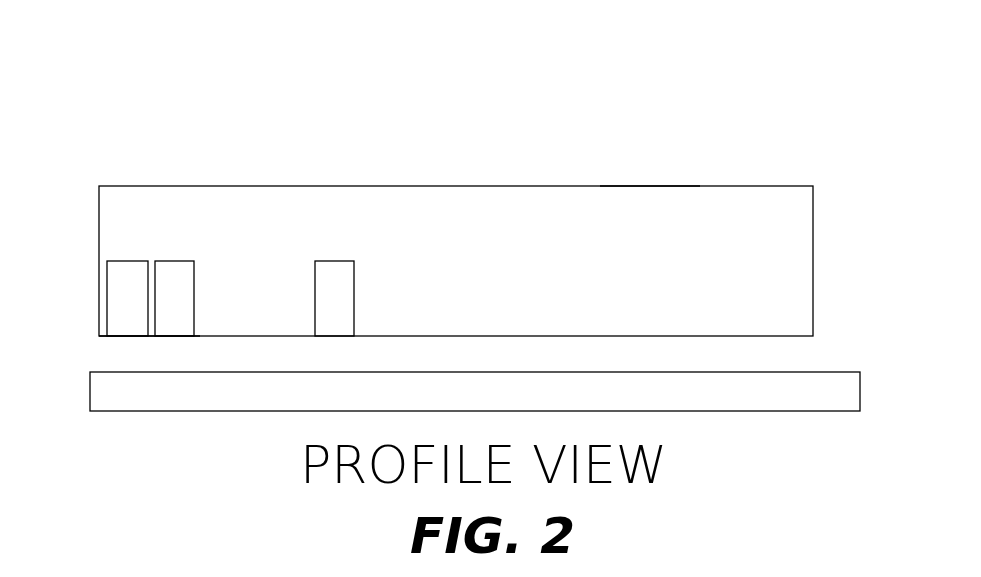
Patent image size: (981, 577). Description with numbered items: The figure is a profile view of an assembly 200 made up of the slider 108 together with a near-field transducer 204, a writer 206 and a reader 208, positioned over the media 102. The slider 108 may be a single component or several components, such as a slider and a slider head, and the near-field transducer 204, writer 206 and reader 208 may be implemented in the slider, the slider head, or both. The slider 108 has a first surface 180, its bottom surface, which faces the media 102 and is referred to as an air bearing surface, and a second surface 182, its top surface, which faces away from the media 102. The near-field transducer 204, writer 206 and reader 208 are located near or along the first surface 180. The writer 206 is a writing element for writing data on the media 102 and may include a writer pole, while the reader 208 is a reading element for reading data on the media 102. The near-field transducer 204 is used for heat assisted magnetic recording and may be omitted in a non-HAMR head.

The assembly 200 is at (647, 105).
The slider 108 is at (456, 261).
The second surface 182 is at (640, 178).
The first surface 180 is at (100, 340).
The writer 206 is at (111, 260).
The near-field transducer 204 is at (175, 260).
The reader 208 is at (345, 268).
The media 102 is at (828, 371).